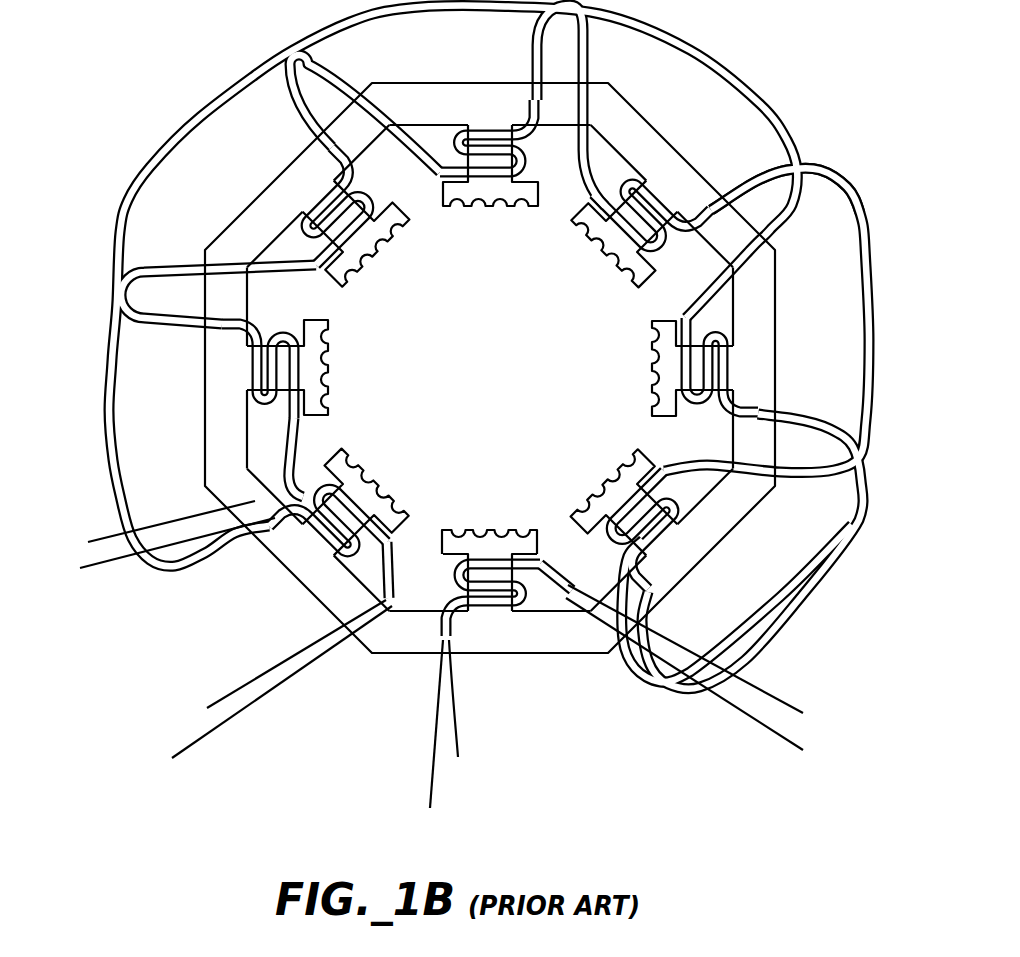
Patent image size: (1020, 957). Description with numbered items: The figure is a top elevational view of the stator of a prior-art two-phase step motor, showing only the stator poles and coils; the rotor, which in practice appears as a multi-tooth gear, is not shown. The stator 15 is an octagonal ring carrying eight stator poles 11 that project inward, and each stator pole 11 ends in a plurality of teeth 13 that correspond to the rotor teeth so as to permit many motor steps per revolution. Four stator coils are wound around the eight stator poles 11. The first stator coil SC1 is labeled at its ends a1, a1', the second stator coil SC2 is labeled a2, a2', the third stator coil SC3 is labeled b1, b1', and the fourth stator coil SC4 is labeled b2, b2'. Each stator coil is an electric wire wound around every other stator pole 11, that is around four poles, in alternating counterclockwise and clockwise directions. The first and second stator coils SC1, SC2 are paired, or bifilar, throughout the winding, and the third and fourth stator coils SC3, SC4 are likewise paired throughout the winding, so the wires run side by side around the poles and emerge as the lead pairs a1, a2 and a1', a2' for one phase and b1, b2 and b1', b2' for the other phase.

The stator pole 11 is at (481, 548).
The teeth 13 is at (471, 533).
The stator 15 is at (553, 647).
The first stator coil SC1 is at (783, 602).
The second stator coil SC2 is at (810, 598).
The third stator coil SC3 is at (856, 318).
The fourth stator coil SC4 is at (840, 190).
The first stator coil lead a1 is at (401, 724).
The second stator coil lead a2 is at (483, 698).
The first stator coil return lead a1' is at (153, 516).
The second stator coil return lead a2' is at (177, 567).
The third stator coil lead b1 is at (684, 682).
The fourth stator coil lead b2 is at (710, 649).
The third stator coil return lead b1' is at (281, 654).
The fourth stator coil return lead b2' is at (282, 704).